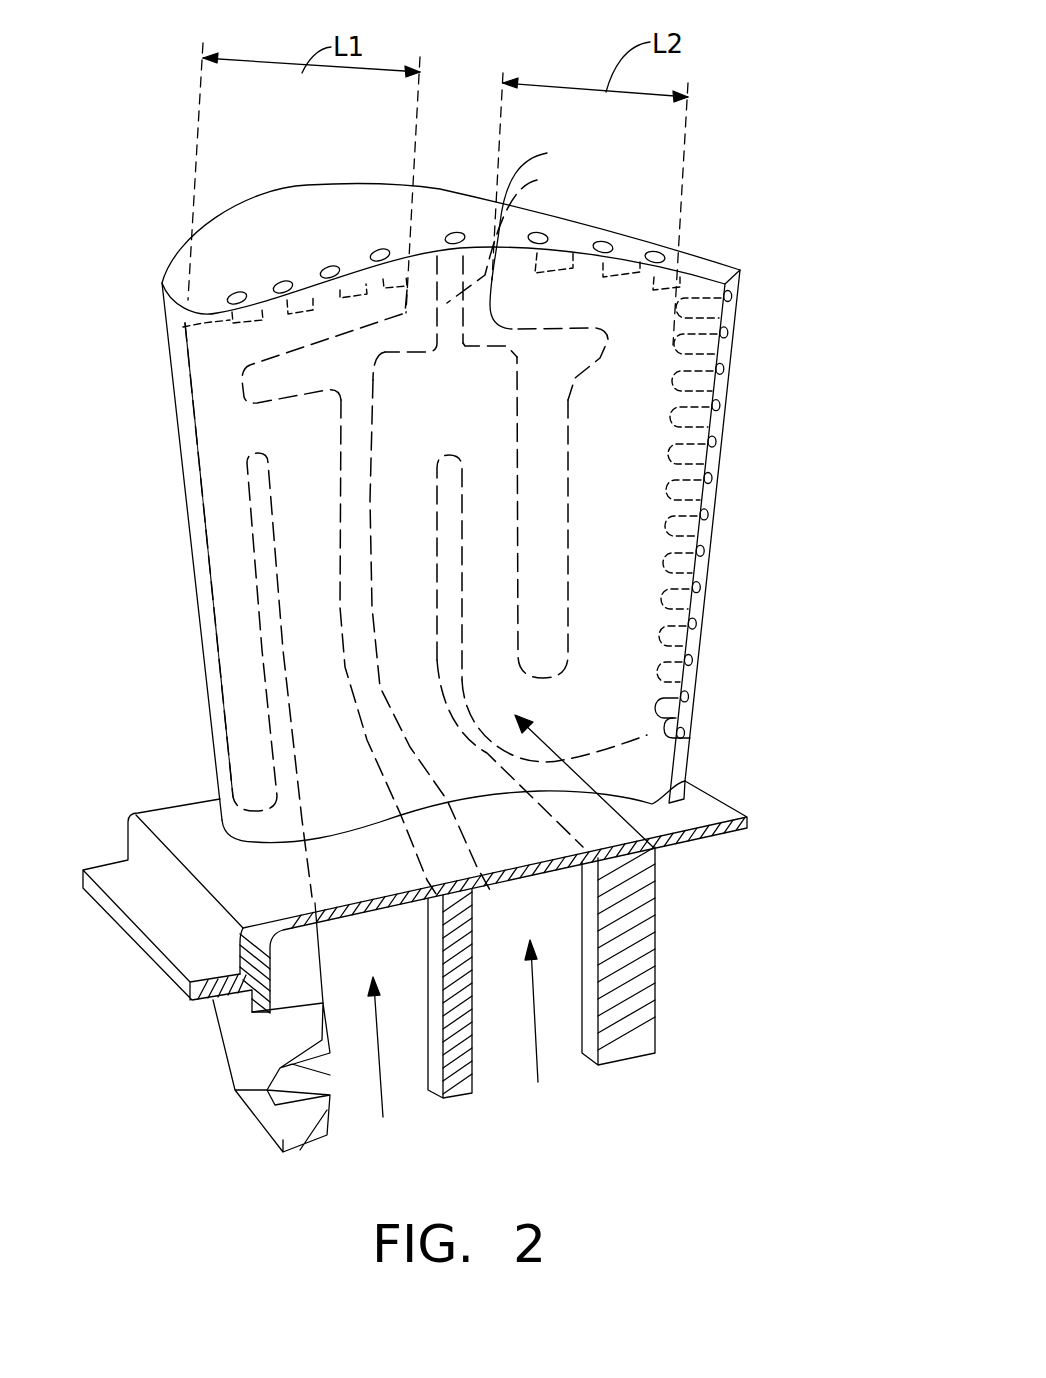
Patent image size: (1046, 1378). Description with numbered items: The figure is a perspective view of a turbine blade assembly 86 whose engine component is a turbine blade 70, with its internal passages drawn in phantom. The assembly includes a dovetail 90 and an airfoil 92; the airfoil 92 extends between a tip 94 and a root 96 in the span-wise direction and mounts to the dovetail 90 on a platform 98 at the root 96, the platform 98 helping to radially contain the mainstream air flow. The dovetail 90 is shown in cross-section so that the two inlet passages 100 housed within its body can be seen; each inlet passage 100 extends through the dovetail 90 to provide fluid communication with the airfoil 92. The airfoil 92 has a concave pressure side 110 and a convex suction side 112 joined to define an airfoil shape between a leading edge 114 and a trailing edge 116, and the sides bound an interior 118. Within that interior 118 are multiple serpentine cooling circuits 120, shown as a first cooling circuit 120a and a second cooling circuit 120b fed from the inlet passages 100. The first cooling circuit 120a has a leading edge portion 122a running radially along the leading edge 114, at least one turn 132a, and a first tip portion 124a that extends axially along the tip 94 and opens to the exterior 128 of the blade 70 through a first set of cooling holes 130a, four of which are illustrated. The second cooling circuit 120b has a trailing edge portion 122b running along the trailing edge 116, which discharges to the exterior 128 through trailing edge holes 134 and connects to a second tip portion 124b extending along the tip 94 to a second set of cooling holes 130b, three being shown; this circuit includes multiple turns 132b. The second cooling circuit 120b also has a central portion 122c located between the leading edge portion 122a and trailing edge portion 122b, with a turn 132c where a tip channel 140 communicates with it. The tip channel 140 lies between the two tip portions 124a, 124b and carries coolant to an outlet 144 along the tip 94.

The turbine blade 70 is at (462, 544).
The turbine blade assembly 86 is at (752, 166).
The dovetail 90 is at (245, 1068).
The airfoil 92 is at (425, 200).
The tip 94 is at (237, 247).
The root 96 is at (650, 800).
The platform 98 is at (175, 817).
The inlet passage 100 is at (408, 1112).
The pressure side 110 is at (255, 310).
The suction side 112 is at (542, 233).
The leading edge 114 is at (182, 307).
The trailing edge 116 is at (742, 284).
The interior 118 is at (615, 628).
The cooling circuits 120 is at (653, 847).
The first cooling circuit 120a is at (320, 632).
The second cooling circuit 120b is at (615, 420).
The leading edge portion 122a is at (250, 554).
The trailing edge portion 122b is at (640, 526).
The central portion 122c is at (470, 514).
The first tip portion 124a is at (342, 344).
The second tip portion 124b is at (598, 324).
The exterior 128 is at (880, 506).
The first set of cooling holes 130a is at (380, 250).
The second set of cooling holes 130b is at (655, 256).
The turn 132a is at (320, 449).
The turn 132b is at (610, 726).
The turn 132c is at (480, 444).
The trailing edge hole 134 is at (695, 707).
The tip channel 140 is at (497, 260).
The outlet 144 is at (452, 232).